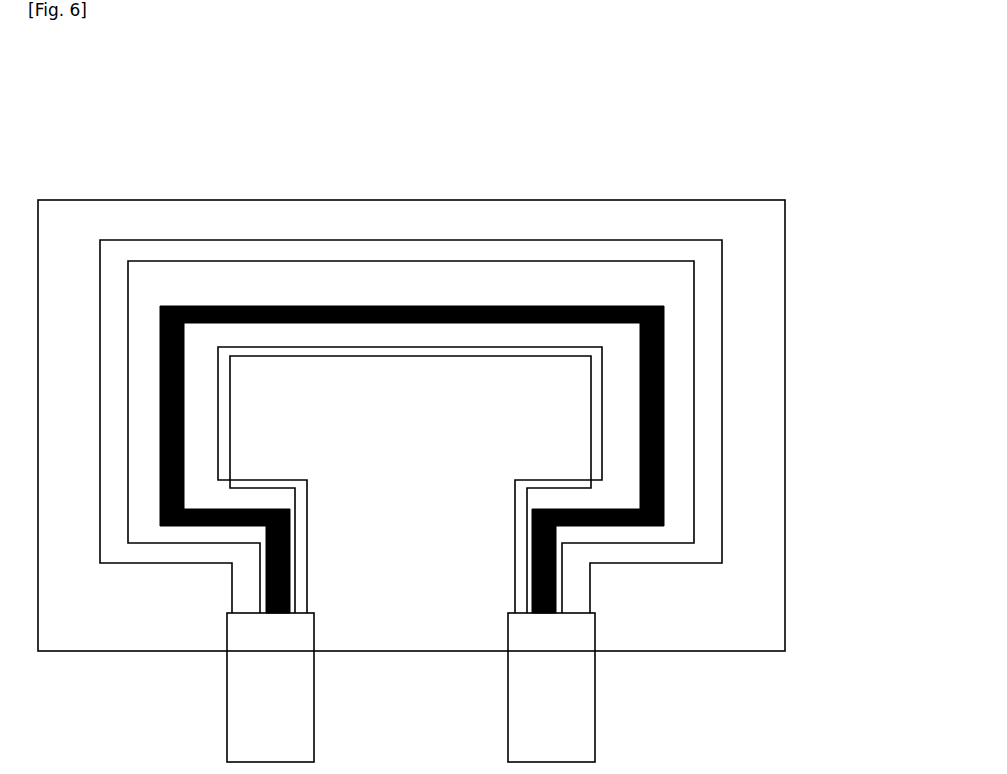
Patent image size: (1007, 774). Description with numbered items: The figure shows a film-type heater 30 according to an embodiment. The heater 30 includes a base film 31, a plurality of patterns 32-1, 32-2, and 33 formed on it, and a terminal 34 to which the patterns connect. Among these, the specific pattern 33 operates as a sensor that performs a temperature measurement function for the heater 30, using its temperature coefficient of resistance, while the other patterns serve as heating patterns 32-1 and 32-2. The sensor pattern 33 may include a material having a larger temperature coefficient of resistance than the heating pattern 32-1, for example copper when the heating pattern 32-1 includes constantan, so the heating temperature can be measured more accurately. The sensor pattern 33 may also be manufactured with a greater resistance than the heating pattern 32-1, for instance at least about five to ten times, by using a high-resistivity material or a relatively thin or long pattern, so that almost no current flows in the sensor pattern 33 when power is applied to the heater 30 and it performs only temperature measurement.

The heater 30 is at (553, 119).
The base film 31 is at (505, 207).
The heating pattern 32-1 is at (262, 350).
The heating pattern 32-2 is at (429, 256).
The sensor pattern 33 is at (355, 305).
The terminal 34 is at (315, 722).